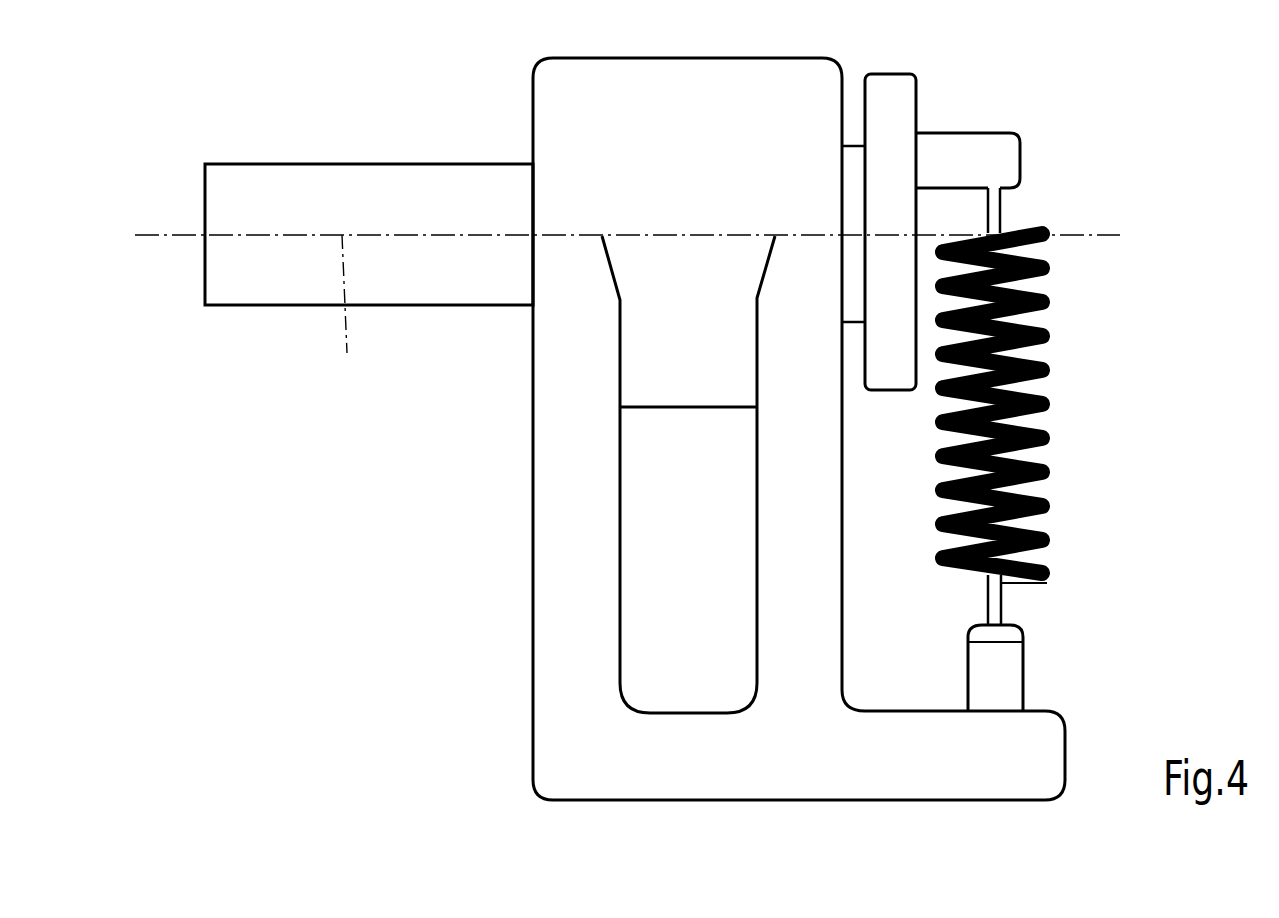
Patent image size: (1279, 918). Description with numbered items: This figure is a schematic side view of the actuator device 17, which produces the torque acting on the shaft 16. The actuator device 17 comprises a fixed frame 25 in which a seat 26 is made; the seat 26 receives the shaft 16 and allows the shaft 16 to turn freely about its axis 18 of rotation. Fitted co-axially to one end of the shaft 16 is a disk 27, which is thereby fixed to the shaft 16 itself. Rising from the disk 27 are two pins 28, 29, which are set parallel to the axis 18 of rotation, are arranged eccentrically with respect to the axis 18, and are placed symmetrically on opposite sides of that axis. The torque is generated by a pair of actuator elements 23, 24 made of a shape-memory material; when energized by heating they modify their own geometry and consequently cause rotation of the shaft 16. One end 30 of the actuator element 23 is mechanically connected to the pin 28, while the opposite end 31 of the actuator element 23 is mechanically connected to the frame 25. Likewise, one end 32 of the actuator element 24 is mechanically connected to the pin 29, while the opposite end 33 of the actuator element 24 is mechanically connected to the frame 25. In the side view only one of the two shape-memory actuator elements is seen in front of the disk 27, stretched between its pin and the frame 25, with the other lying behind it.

The shaft 16 is at (318, 176).
The actuator device 17 is at (731, 420).
The axis of rotation 18 is at (345, 308).
The actuator element 23 is at (1066, 408).
The actuator element 24 is at (1070, 411).
The fixed frame 25 is at (825, 778).
The seat 26 is at (677, 78).
The disk 27 is at (885, 100).
The pin 28 is at (1008, 160).
The pin 29 is at (1008, 160).
The end of actuator element 30 is at (1044, 210).
The end of actuator element 31 is at (1043, 643).
The end of actuator element 32 is at (994, 209).
The end of actuator element 33 is at (996, 608).